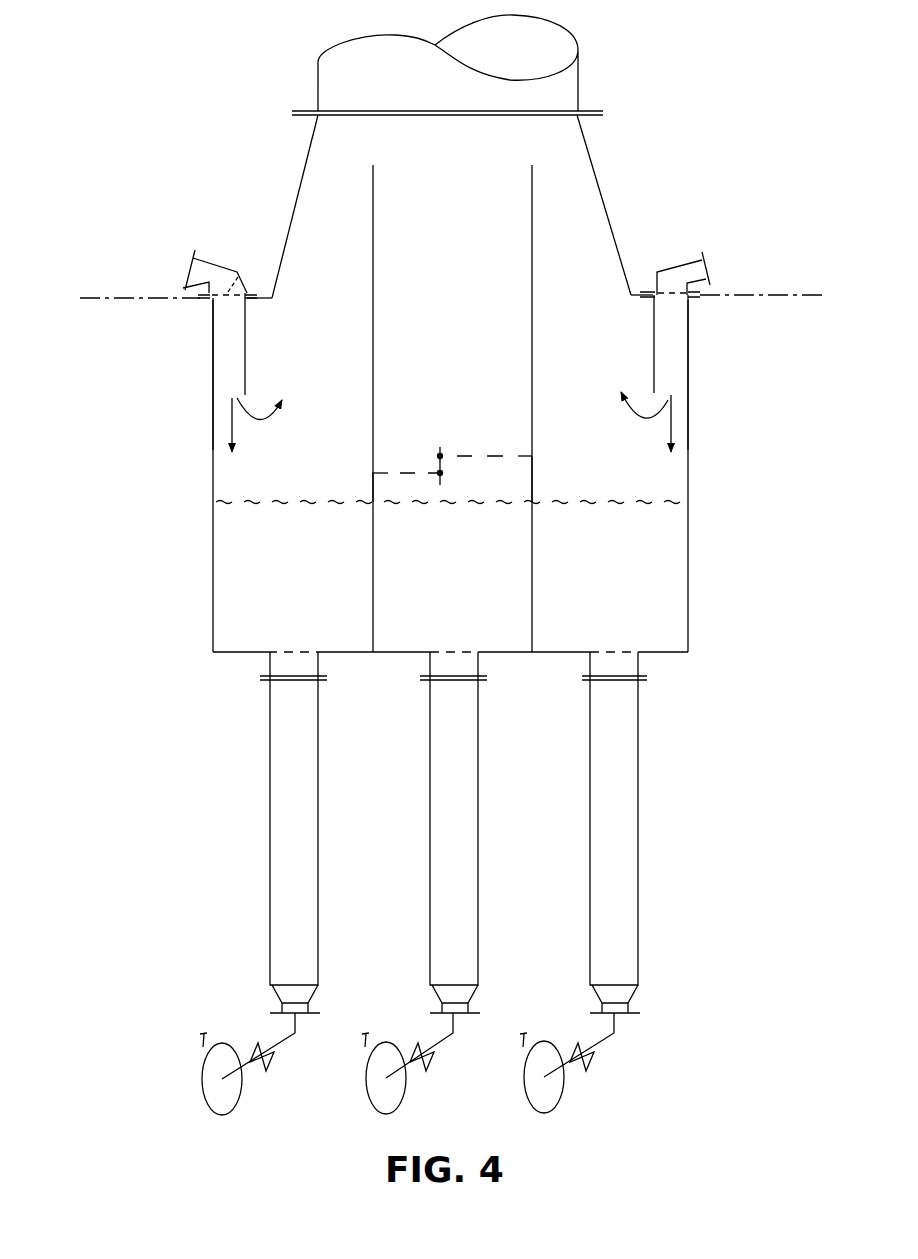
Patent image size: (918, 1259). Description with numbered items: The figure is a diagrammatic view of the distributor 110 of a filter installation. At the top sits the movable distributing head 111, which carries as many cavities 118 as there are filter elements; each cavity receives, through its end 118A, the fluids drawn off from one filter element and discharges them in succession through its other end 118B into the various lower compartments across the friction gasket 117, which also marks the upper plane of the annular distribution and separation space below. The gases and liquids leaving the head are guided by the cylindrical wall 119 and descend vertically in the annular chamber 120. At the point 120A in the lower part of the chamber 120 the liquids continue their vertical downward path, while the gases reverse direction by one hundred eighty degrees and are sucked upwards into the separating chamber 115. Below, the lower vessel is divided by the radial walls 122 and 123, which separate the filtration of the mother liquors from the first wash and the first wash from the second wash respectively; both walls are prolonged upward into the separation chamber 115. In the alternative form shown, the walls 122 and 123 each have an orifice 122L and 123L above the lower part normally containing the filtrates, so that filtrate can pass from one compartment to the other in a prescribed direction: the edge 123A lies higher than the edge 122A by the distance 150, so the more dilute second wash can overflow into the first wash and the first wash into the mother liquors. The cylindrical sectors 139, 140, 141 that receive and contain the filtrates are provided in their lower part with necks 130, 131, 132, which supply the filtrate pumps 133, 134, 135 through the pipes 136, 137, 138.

The vessel 110 is at (690, 409).
The movable distributing head 111 is at (650, 291).
The separating chamber 115 is at (462, 208).
The friction gasket 117 is at (766, 291).
The cavity 118 is at (210, 262).
The cavity end 118A is at (188, 265).
The cavity end 118B is at (234, 275).
The cylindrical wall 119 is at (247, 316).
The annular chamber 120 is at (227, 335).
The lower point of annular chamber 120A is at (248, 394).
The radial wall 122 is at (375, 315).
The edge 122A is at (370, 472).
The orifice 122L is at (377, 460).
The radial wall 123 is at (530, 315).
The edge 123A is at (535, 456).
The orifice 123L is at (533, 460).
The neck 130 is at (268, 668).
The neck 131 is at (428, 668).
The neck 132 is at (588, 666).
The filtrate pump 133 is at (178, 1117).
The filtrate pump 134 is at (355, 1117).
The filtrate pump 135 is at (521, 1117).
The pipe 136 is at (304, 845).
The pipe 137 is at (464, 845).
The pipe 138 is at (624, 845).
The cylindrical sector 139 is at (297, 628).
The cylindrical sector 140 is at (465, 628).
The cylindrical sector 141 is at (627, 628).
The distance 150 is at (444, 463).